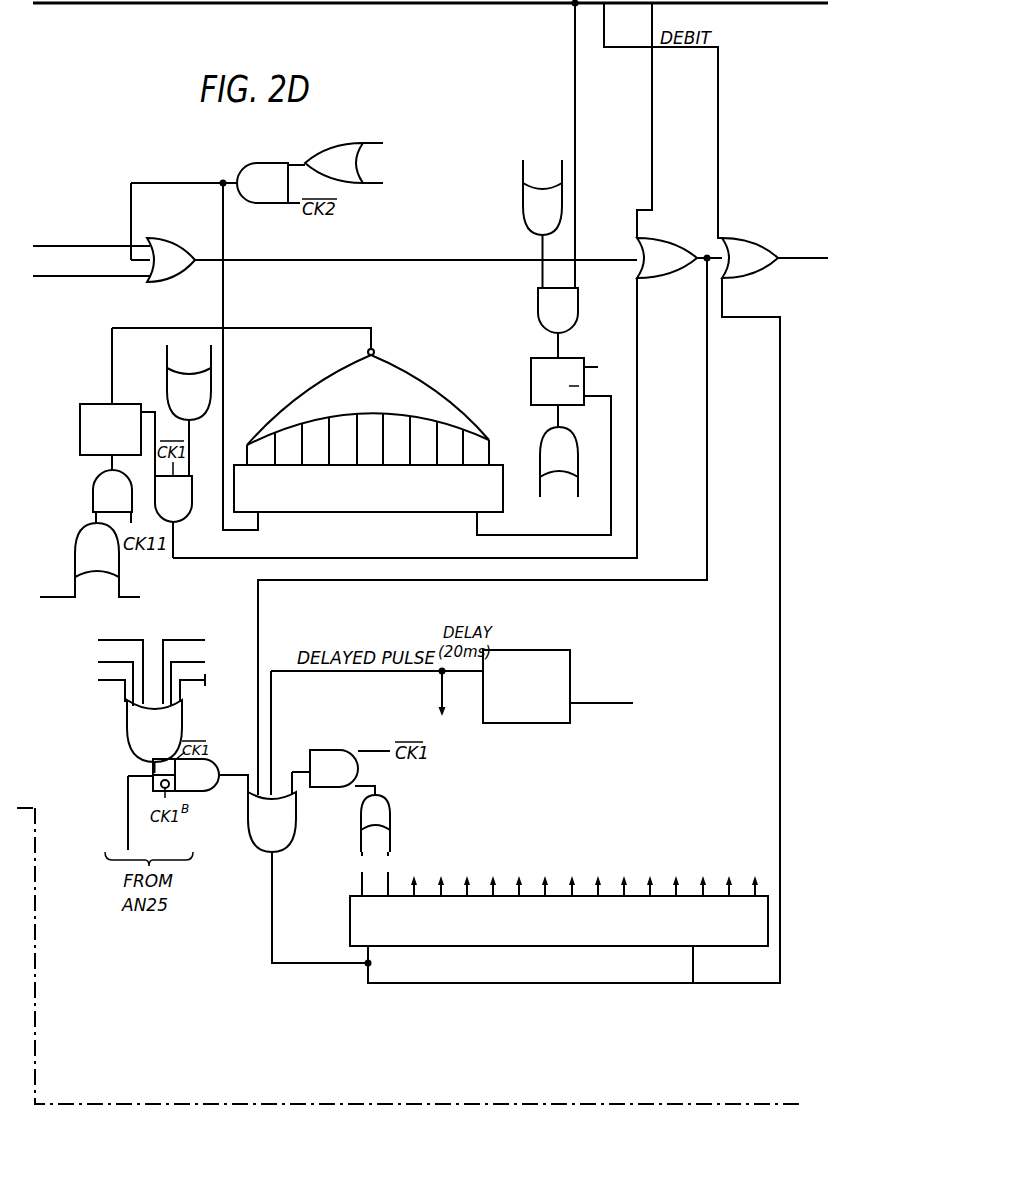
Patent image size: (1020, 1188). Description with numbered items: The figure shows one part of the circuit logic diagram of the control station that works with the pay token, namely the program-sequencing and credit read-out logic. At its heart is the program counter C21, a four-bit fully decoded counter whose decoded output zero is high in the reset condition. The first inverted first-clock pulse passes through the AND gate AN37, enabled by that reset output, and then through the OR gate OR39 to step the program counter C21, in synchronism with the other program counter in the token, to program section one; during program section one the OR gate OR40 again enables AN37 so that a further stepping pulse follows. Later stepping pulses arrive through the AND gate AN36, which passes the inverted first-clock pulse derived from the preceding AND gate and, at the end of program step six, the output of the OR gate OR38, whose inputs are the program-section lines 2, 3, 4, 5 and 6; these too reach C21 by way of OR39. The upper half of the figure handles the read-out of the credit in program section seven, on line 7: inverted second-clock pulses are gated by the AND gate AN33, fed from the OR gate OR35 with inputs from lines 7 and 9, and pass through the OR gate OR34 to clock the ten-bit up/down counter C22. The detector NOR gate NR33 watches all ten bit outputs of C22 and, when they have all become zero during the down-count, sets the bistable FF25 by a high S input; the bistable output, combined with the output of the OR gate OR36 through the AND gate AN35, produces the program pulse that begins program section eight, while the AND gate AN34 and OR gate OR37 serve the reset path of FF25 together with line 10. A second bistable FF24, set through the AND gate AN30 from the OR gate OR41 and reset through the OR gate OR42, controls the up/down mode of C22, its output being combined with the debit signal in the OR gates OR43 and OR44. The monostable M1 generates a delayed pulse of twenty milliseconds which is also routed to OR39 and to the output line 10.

The AND gate AN33 is at (271, 183).
The OR gate OR35 is at (344, 163).
The OR gate OR34 is at (171, 260).
The OR gate OR41 is at (542, 224).
The AND gate AN30 is at (558, 323).
The bistable FF24 is at (550, 382).
The OR gate OR42 is at (559, 474).
The OR gate OR43 is at (667, 258).
The OR gate OR44 is at (750, 258).
The bistable FF25 is at (110, 428).
The OR gate OR36 is at (189, 410).
The AND gate AN35 is at (173, 517).
The AND gate AN34 is at (112, 496).
The OR gate OR37 is at (90, 573).
The detector NOR gate NR33 is at (368, 410).
The counter C22 is at (369, 504).
The OR gate OR38 is at (157, 706).
The AND gate AN36 is at (200, 775).
The AND gate AN37 is at (341, 772).
The OR gate OR39 is at (272, 812).
The OR gate OR40 is at (375, 823).
The monostable M1 is at (526, 699).
The program counter C21 is at (559, 917).
The signal line 2 is at (104, 682).
The signal line 3 is at (108, 663).
The signal line 4 is at (113, 641).
The signal line 5 is at (190, 640).
The signal line 6 is at (195, 662).
The signal line 7 is at (338, 245).
The signal line 9 is at (380, 248).
The signal line 10 is at (392, 651).